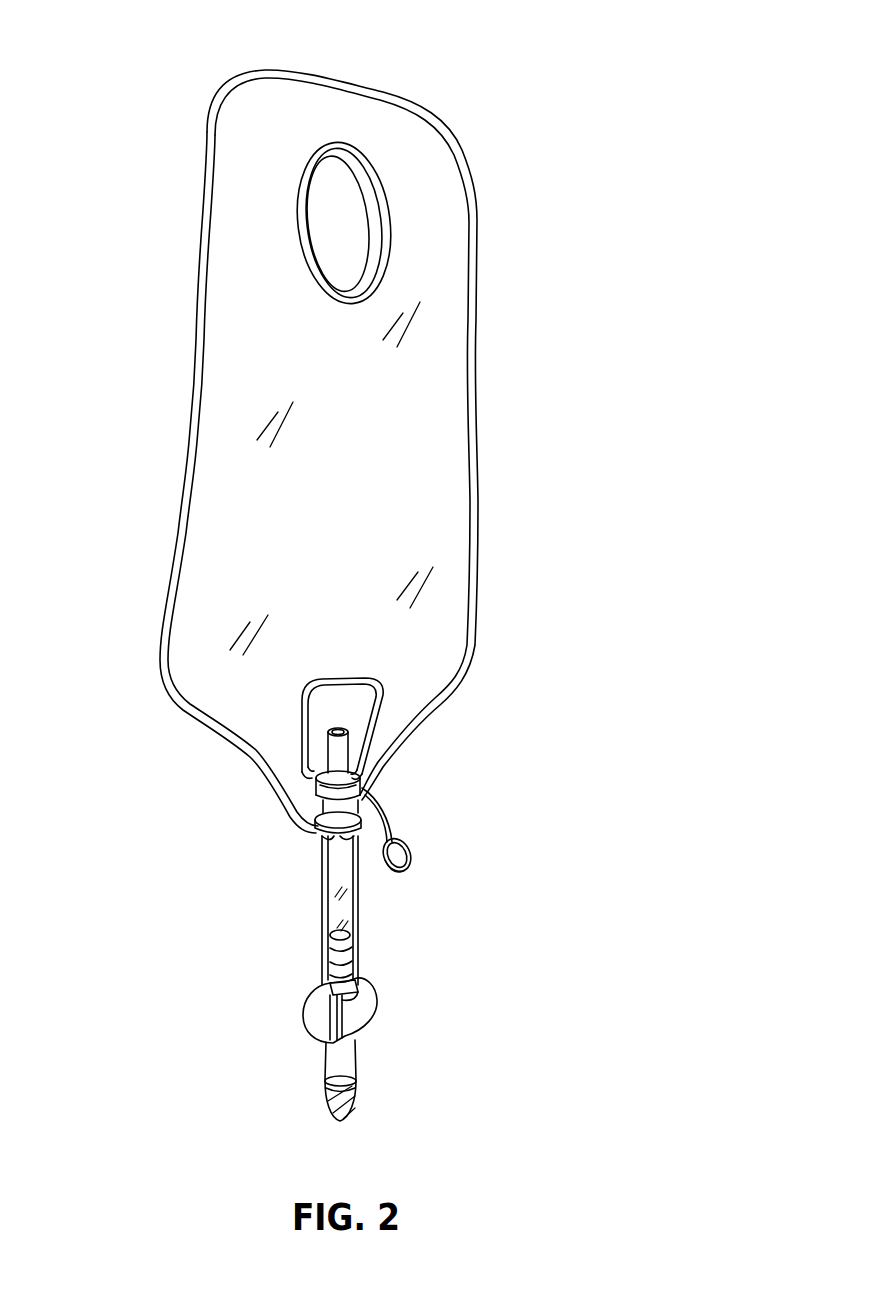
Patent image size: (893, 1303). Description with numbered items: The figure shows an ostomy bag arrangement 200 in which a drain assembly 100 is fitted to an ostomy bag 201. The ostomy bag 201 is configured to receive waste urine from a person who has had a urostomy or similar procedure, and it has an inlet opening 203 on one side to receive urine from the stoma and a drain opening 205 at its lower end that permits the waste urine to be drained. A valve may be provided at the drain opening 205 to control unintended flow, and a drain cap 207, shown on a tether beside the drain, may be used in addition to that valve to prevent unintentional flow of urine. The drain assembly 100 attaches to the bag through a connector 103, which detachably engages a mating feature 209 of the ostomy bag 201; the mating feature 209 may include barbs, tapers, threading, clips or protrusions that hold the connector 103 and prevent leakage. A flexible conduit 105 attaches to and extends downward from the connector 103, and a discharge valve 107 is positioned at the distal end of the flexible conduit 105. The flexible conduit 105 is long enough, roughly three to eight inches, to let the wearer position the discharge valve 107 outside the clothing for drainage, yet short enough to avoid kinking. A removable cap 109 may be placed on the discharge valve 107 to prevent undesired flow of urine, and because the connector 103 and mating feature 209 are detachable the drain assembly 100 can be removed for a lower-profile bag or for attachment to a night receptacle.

The drain assembly 100 is at (238, 1035).
The connector 103 is at (323, 838).
The flexible conduit 105 is at (330, 893).
The discharge valve 107 is at (363, 990).
The removable cap 109 is at (327, 1112).
The ostomy bag arrangement 200 is at (126, 345).
The ostomy bag 201 is at (395, 450).
The inlet opening 203 is at (343, 223).
The drain opening 205 is at (318, 722).
The drain cap 207 is at (410, 840).
The mating feature 209 is at (360, 792).